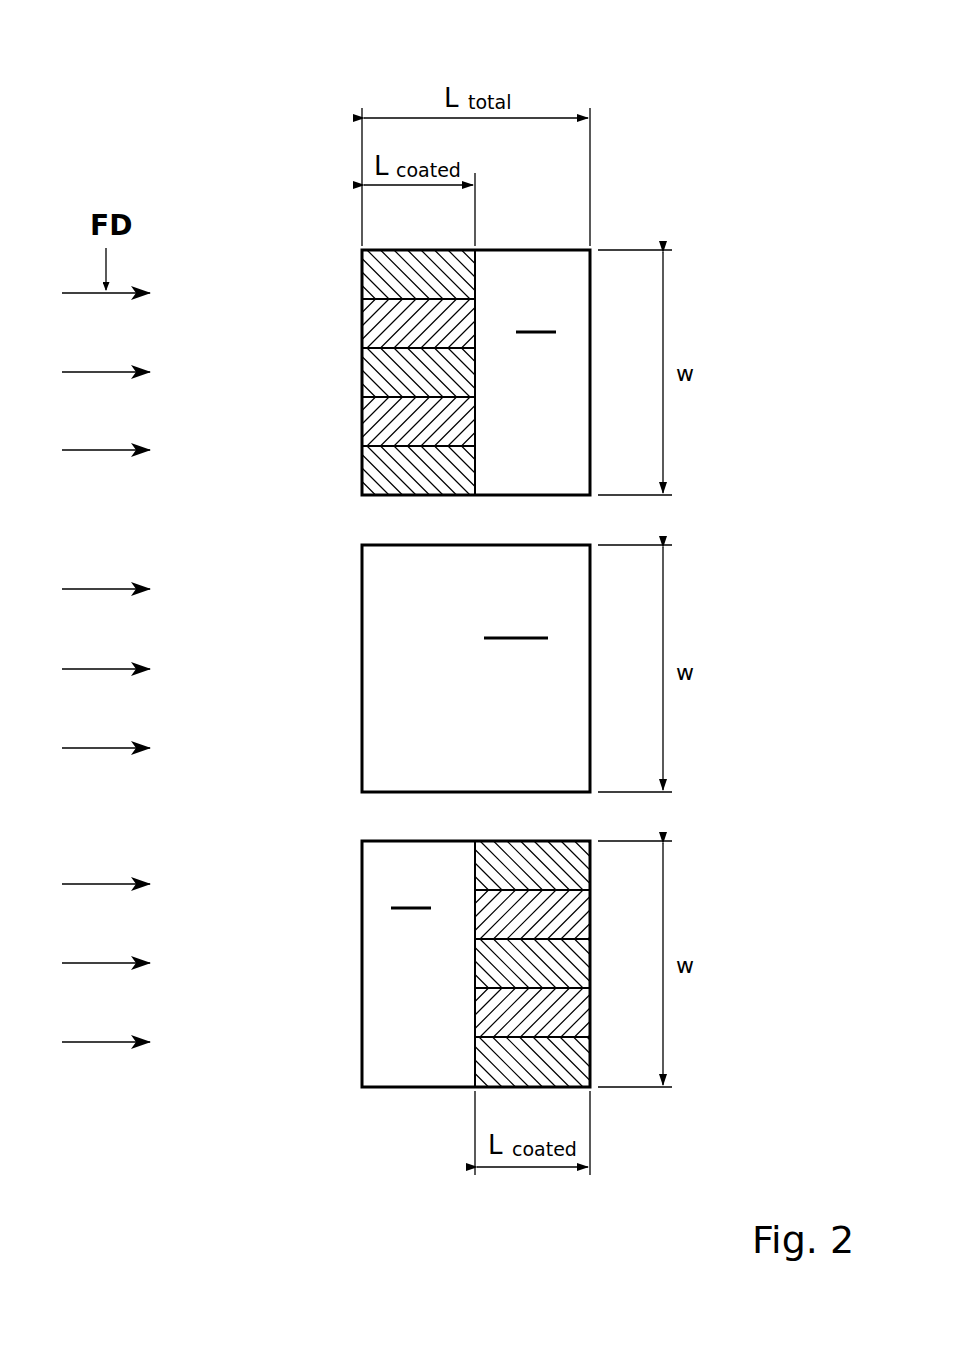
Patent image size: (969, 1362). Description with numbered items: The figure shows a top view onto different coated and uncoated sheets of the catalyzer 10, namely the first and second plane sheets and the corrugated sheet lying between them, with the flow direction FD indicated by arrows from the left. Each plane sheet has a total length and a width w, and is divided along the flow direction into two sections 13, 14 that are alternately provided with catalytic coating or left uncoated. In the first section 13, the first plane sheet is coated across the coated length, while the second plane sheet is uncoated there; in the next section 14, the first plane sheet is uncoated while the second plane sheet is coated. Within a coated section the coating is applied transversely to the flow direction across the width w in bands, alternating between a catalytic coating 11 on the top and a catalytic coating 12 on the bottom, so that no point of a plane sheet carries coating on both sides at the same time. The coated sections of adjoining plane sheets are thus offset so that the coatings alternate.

The catalyzer 10 is at (772, 133).
The catalytic coating 11 is at (398, 273).
The catalytic coating 12 is at (395, 418).
The section 13 is at (412, 88).
The section 14 is at (540, 88).